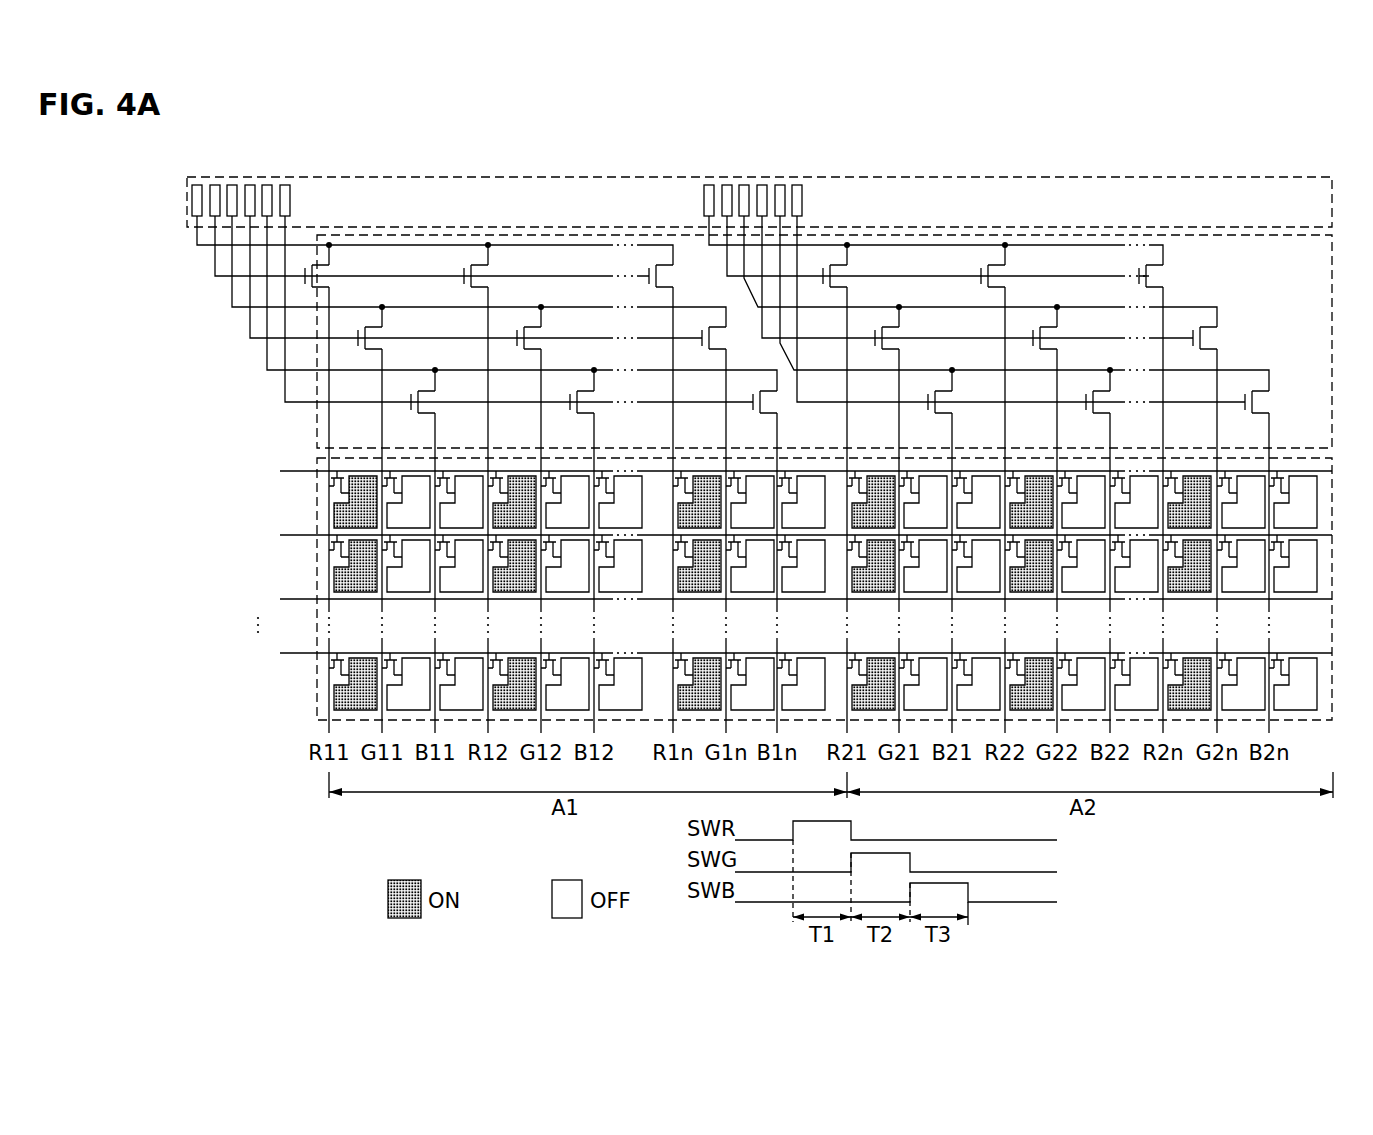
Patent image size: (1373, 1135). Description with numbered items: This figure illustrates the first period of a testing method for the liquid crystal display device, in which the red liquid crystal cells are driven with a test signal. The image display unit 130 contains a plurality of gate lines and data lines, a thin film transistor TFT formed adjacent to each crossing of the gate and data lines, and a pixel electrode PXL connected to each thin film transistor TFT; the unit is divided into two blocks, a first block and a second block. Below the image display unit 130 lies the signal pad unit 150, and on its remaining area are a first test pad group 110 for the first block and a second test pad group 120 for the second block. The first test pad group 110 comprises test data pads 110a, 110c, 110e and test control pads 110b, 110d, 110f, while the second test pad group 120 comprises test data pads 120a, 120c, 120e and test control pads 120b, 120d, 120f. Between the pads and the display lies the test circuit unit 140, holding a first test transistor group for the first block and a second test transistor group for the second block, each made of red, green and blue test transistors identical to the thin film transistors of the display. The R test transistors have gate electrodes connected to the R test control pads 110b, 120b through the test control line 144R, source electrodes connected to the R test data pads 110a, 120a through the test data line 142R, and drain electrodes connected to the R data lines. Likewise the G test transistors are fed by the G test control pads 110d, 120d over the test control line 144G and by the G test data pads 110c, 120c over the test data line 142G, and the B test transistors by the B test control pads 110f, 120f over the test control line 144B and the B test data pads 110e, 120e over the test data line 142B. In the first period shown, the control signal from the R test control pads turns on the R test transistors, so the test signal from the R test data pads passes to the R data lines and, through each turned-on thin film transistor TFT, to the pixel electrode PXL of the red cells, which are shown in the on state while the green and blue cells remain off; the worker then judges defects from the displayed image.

The first test pad group 110 is at (288, 164).
The R test data pad 110a is at (193, 185).
The R test control pad 110b is at (213, 185).
The G test data pad 110c is at (233, 185).
The G test control pad 110d is at (250, 185).
The B test data pad 110e is at (268, 185).
The B test control pad 110f is at (290, 193).
The second test pad group 120 is at (792, 164).
The R test data pad 120a is at (704, 185).
The R test control pad 120b is at (724, 185).
The G test data pad 120c is at (745, 185).
The G test control pad 120d is at (762, 185).
The B test data pad 120e is at (780, 185).
The B test control pad 120f is at (802, 195).
The image display unit 130 is at (783, 589).
The test circuit unit 140 is at (1332, 293).
The signal pad unit 150 is at (1332, 203).
The R test data line 142R is at (197, 246).
The R test control line 144R is at (215, 277).
The G test data line 142G is at (232, 308).
The G test control line 144G is at (250, 339).
The B test data line 142B is at (267, 371).
The B test control line 144B is at (285, 403).
The thin film transistor TFT is at (336, 488).
The pixel electrode PXL is at (334, 512).